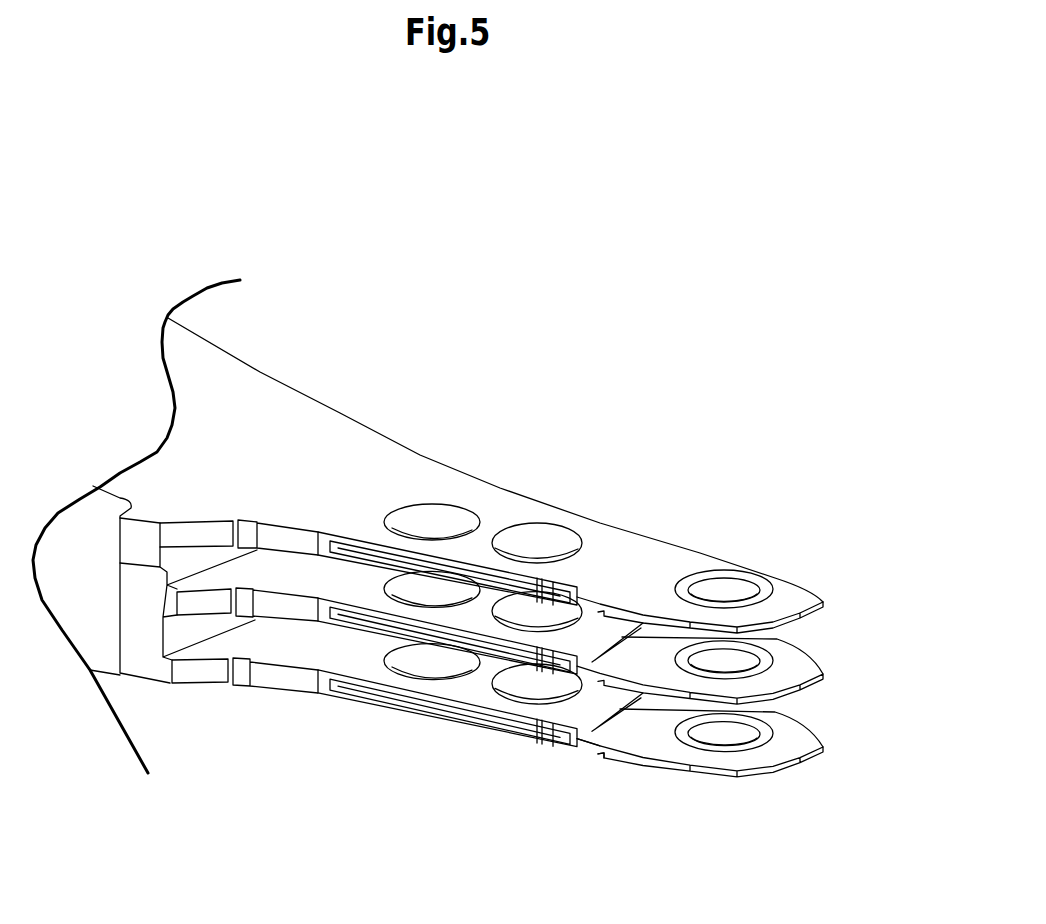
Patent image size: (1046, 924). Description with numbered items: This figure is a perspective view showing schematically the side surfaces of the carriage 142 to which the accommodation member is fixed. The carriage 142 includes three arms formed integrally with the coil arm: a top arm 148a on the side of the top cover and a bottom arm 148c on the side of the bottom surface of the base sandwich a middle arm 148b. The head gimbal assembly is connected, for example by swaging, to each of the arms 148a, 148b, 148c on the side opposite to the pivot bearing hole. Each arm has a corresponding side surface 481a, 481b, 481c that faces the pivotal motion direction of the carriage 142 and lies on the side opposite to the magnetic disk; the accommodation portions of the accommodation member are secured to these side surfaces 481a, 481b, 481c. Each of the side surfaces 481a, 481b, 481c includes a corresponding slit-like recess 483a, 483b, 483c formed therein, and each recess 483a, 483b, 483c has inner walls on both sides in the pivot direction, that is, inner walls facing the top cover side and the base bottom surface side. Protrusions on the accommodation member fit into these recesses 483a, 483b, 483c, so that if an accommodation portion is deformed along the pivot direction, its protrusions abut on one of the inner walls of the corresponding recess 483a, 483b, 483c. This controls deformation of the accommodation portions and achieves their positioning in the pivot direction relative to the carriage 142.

The carriage 142 is at (265, 370).
The top arm 148a is at (782, 590).
The middle arm 148b is at (795, 667).
The bottom arm 148c is at (788, 742).
The side surface of the top arm 481a is at (591, 602).
The side surface of the middle arm 481b is at (583, 673).
The side surface of the bottom arm 481c is at (583, 740).
The slit-like recess 483a is at (343, 543).
The slit-like recess 483b is at (337, 617).
The slit-like recess 483c is at (353, 688).